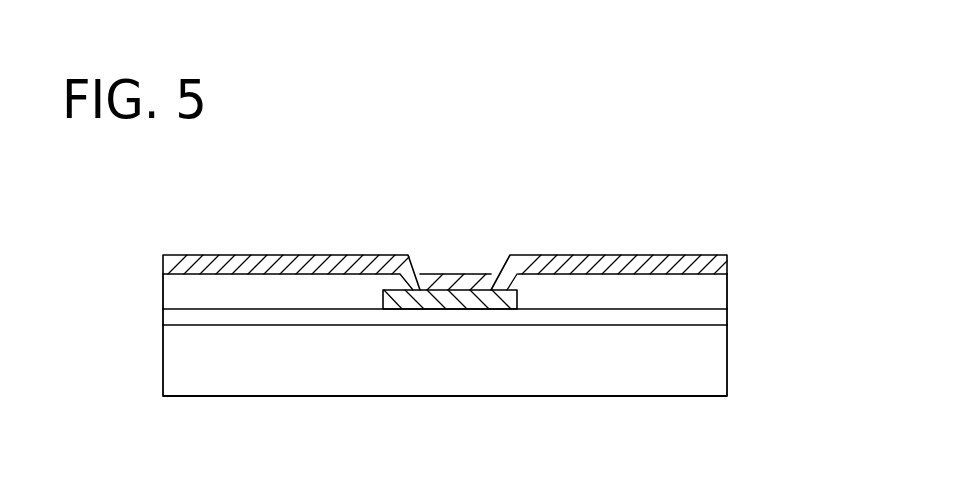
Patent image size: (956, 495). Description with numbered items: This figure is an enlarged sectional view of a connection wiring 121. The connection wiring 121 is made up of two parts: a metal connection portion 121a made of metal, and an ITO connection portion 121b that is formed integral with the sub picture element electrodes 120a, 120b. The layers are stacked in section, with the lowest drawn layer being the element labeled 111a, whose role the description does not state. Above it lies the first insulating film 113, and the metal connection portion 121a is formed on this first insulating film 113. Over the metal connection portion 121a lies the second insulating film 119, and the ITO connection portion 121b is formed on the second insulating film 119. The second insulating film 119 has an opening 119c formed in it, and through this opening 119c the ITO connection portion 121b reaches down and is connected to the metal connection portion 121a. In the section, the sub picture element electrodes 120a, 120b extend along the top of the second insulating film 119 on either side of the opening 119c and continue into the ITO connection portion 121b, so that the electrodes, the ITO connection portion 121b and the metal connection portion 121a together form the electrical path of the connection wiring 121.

The substrate 111a is at (670, 383).
The first insulating film 113 is at (717, 315).
The second insulating film 119 is at (717, 293).
The opening 119c is at (495, 277).
The sub picture element electrode 120a is at (275, 257).
The sub picture element electrode 120b is at (655, 257).
The connection wiring 121 is at (487, 240).
The metal connection portion 121a is at (450, 304).
The ITO connection portion 121b is at (455, 273).